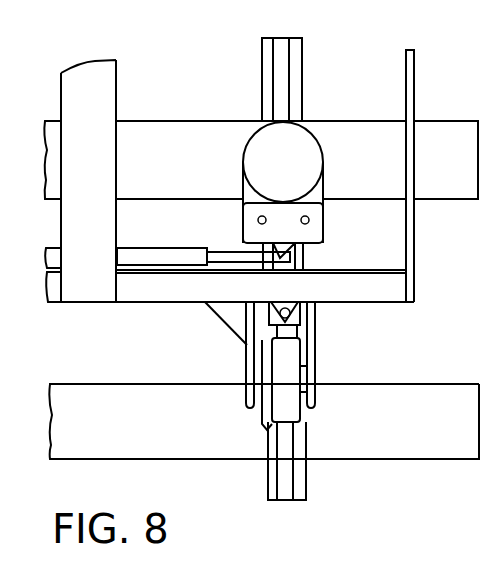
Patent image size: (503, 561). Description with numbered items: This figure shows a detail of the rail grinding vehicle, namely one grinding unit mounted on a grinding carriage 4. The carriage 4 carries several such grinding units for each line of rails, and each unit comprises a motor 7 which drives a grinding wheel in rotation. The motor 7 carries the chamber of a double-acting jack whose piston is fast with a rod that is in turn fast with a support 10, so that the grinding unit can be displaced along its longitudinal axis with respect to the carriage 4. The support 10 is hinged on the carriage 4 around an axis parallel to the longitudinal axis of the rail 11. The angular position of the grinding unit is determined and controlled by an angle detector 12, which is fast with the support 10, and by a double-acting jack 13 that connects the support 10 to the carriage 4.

The grinding carriage 4 is at (418, 325).
The motor 7 is at (283, 162).
The support 10 is at (305, 229).
The rail 11 is at (284, 92).
The angle detector 12 is at (305, 330).
The double-acting jack 13 is at (157, 258).